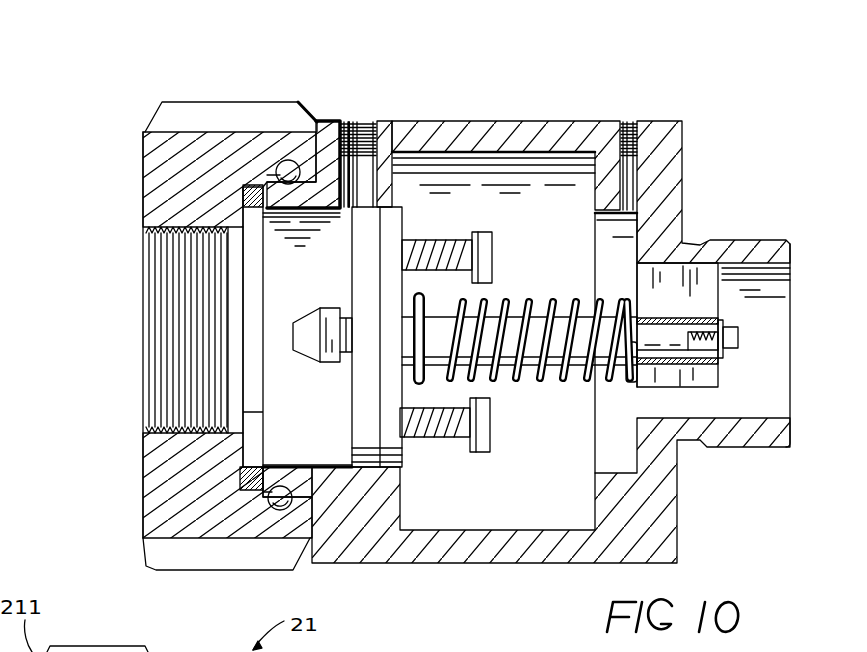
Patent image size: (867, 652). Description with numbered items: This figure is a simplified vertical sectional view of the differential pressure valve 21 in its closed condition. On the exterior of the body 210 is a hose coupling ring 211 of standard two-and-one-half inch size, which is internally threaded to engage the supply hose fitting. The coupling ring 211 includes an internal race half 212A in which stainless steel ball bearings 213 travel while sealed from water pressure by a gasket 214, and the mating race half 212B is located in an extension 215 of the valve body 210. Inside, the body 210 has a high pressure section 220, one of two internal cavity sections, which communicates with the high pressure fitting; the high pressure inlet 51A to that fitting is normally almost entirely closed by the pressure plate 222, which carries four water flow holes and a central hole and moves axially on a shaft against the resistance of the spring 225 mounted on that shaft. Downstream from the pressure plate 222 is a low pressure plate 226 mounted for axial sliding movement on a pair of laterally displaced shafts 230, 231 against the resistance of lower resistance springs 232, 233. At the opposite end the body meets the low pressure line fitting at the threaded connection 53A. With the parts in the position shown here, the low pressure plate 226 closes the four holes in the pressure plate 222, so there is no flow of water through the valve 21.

The differential pressure valve 21 is at (690, 147).
The high pressure inlet 51A is at (369, 133).
The threads 53A is at (636, 122).
The body 210 is at (677, 520).
The hose coupling ring 211 is at (205, 100).
The internal race half 212A is at (281, 164).
The mating race half 212B is at (248, 184).
The ball bearings 213 is at (281, 168).
The gasket 214 is at (245, 189).
The extension 215 is at (247, 203).
The high pressure section 220 is at (277, 252).
The pressure plate 222 is at (352, 398).
The spring 225 is at (552, 300).
The low pressure plate 226 is at (352, 266).
The shaft 230 is at (493, 254).
The shaft 231 is at (491, 447).
The spring 232 is at (447, 243).
The spring 233 is at (438, 440).